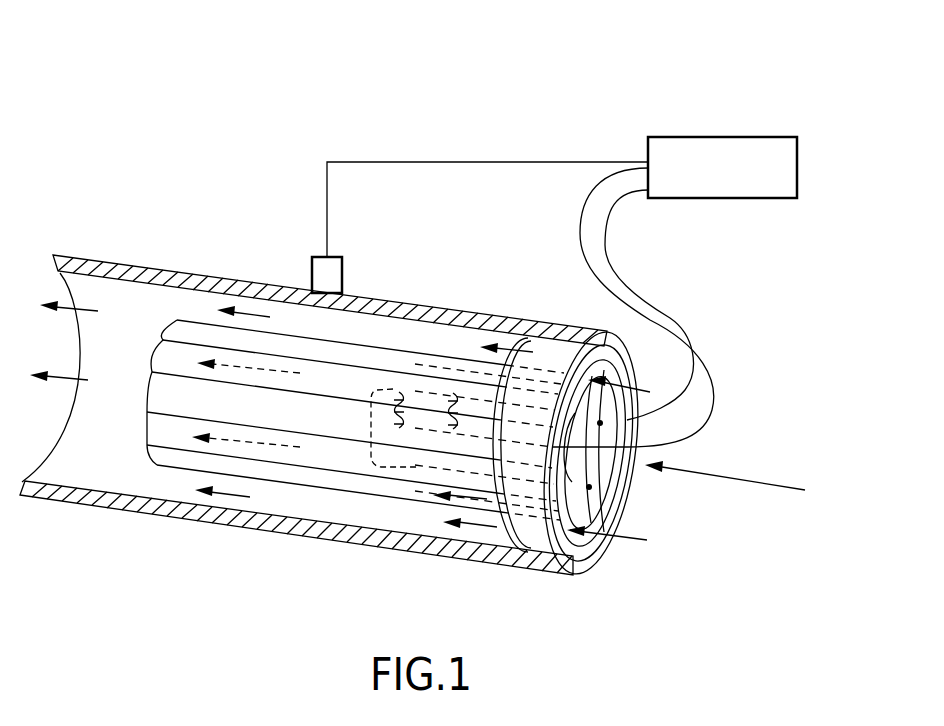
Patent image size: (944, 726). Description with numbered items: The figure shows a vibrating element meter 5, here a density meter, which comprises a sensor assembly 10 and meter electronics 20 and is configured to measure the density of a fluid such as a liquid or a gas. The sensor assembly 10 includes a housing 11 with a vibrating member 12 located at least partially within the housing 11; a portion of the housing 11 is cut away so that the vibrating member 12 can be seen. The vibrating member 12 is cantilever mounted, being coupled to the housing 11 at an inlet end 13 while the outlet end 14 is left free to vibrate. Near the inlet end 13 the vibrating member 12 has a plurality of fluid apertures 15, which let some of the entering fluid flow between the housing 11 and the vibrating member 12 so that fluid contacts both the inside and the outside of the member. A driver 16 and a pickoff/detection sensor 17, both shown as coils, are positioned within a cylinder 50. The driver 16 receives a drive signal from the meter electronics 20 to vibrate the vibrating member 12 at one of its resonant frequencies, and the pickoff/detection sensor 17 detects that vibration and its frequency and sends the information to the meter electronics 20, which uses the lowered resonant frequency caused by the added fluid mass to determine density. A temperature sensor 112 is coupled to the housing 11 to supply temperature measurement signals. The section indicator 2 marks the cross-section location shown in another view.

The vibrating element meter 5 is at (116, 93).
The sensor assembly 10 is at (616, 591).
The housing 11 is at (448, 321).
The vibrating member 12 is at (163, 463).
The inlet end 13 is at (620, 374).
The outlet end 14 is at (162, 367).
The fluid apertures 15 is at (600, 423).
The driver 16 is at (461, 372).
The pickoff/detection sensor 17 is at (402, 372).
The meter electronics 20 is at (670, 137).
The cylinder 50 is at (413, 467).
The temperature sensor 112 is at (312, 282).
The section line 2- 2 is at (350, 495).